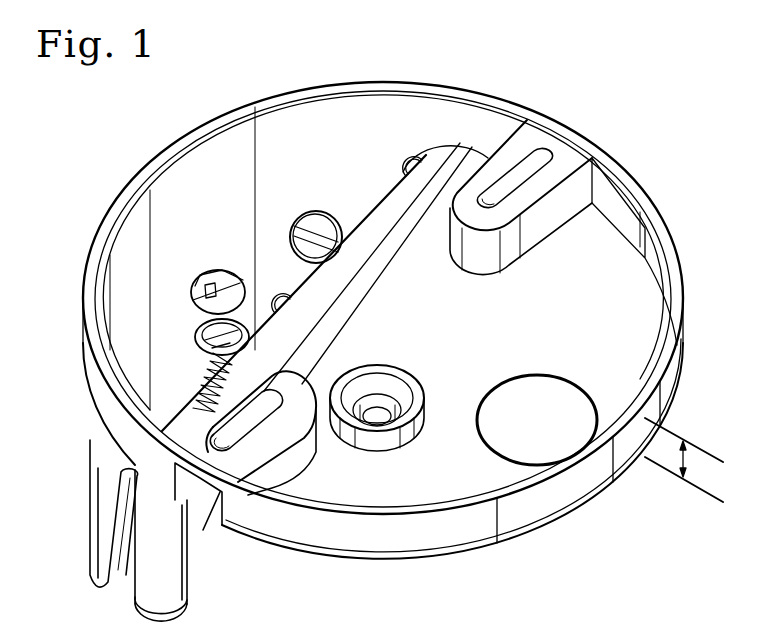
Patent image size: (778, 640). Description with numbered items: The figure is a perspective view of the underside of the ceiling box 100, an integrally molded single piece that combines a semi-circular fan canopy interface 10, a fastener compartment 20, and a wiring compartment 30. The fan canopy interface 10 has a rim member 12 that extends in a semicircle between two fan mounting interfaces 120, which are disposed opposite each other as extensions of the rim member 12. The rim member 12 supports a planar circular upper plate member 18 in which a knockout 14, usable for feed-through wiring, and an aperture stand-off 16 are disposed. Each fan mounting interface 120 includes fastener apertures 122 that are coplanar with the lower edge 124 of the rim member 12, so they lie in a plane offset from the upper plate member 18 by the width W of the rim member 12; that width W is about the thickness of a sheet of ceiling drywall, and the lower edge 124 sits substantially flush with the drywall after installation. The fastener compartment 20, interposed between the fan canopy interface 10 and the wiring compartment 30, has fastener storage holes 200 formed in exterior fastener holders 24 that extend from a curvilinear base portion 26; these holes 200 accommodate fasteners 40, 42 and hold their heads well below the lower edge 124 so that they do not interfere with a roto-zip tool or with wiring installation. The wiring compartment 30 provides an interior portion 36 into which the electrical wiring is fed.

The ceiling box 100 is at (515, 55).
The semi-circular fan canopy interface 10 is at (565, 491).
The rim member 12 is at (653, 215).
The knockout 14 is at (555, 417).
The aperture stand-off 16 is at (373, 422).
The planar circular upper plate member 18 is at (622, 305).
The fastener compartment 20 is at (122, 595).
The exterior fastener holder 24 is at (190, 600).
The curvilinear base portion 26 is at (328, 282).
The wiring compartment 30 is at (103, 531).
The interior portion of the wiring compartment 36 is at (220, 147).
The fastener 40 is at (318, 217).
The fastener 42 is at (215, 273).
The fan mounting interface 120 is at (537, 137).
The fastener aperture 122 is at (508, 190).
The lower edge of the rim member 124 is at (517, 493).
The fastener storage hole 200 is at (276, 312).
The width of rim member W is at (688, 460).